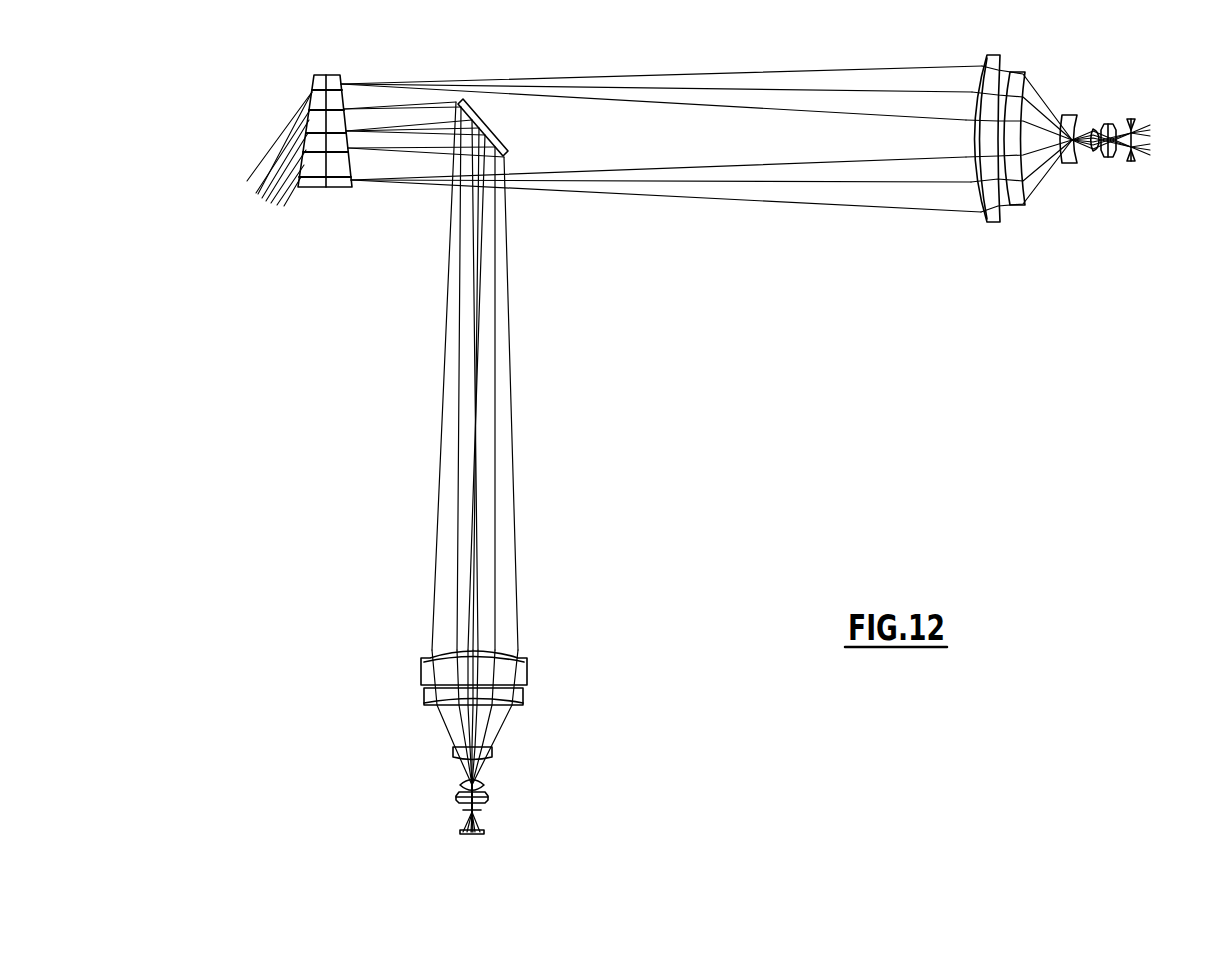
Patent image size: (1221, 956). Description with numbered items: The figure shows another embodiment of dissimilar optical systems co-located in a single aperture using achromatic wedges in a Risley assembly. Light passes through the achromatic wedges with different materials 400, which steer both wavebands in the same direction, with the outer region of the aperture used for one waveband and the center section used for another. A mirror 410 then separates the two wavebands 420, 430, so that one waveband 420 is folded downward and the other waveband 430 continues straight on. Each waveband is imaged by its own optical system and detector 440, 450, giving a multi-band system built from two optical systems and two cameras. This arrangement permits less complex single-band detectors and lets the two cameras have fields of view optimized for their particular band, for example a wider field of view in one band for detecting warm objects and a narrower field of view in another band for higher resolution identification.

The achromatic wedges with different materials 400 is at (282, 101).
The mirror 410 is at (492, 118).
The waveband 420 is at (495, 275).
The waveband 430 is at (590, 93).
The optical system and detector 440 is at (555, 672).
The optical system and detector 450 is at (1040, 216).